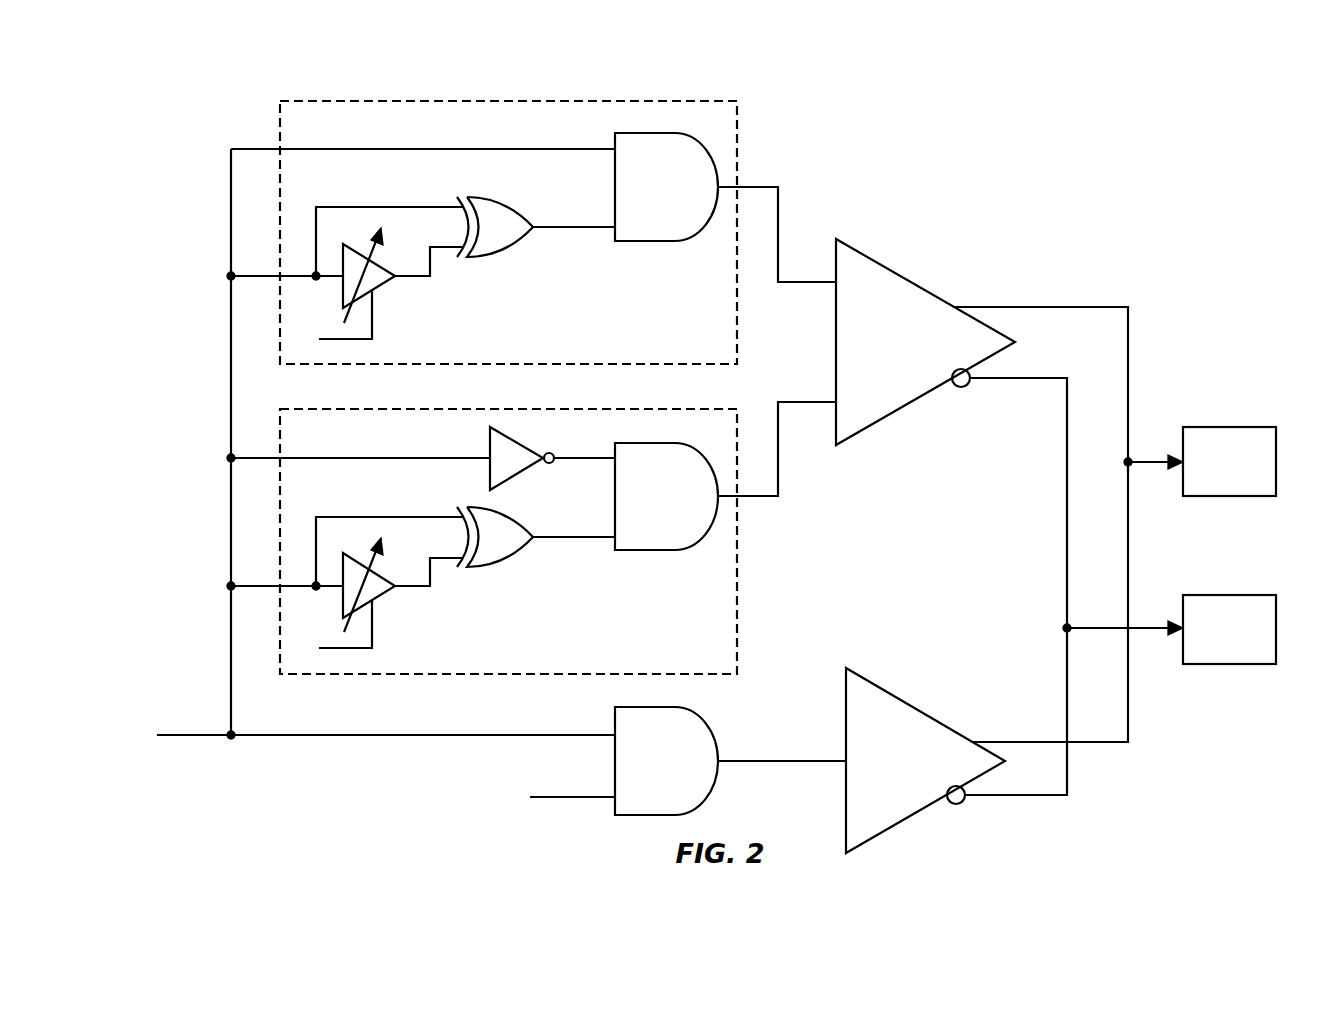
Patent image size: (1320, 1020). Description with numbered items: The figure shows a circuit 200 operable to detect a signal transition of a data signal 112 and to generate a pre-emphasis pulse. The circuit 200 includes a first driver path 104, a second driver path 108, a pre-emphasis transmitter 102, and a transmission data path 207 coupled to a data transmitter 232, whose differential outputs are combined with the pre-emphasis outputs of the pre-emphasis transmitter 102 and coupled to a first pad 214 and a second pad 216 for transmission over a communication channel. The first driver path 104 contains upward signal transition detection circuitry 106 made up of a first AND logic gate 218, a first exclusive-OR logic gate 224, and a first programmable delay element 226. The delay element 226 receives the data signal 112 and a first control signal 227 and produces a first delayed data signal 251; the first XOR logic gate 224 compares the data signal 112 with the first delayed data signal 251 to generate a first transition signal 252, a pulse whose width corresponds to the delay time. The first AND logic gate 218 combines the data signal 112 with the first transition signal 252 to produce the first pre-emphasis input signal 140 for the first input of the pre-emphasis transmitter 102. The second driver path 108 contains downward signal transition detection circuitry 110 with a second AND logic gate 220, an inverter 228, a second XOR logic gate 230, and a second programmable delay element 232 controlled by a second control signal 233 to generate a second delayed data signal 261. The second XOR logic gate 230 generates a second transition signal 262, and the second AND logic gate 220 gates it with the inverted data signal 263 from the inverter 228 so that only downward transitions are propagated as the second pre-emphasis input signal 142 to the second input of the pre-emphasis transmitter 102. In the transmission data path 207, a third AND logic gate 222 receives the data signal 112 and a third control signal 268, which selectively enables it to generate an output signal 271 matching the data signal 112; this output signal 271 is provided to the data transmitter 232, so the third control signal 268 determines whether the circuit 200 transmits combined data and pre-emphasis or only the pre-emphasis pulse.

The pre-emphasis transmitter 102 is at (903, 272).
The first driver path 104 is at (508, 208).
The upward signal transition detection circuitry 106 is at (665, 100).
The second driver path 108 is at (508, 547).
The downward signal transition detection circuitry 110 is at (666, 408).
The data signal 112 is at (208, 734).
The first pre-emphasis input signal 140 is at (780, 210).
The second pre-emphasis input signal 142 is at (778, 477).
The circuit 200 is at (1118, 148).
The transmission data path 207 is at (447, 810).
The first pad 214 is at (1232, 426).
The second pad 216 is at (1232, 594).
The first AND logic gate 218 is at (652, 243).
The second AND logic gate 220 is at (652, 552).
The third AND logic gate 222 is at (703, 718).
The first exclusive-OR logic gate 224 is at (497, 258).
The first programmable delay element 226 is at (383, 288).
The first control signal 227 is at (372, 330).
The inverter 228 is at (488, 445).
The second XOR logic gate 230 is at (497, 568).
The data transmitter 232 is at (383, 598).
The second control signal 233 is at (372, 640).
The first delayed data signal 251 is at (455, 246).
The first transition signal 252 is at (600, 226).
The second delayed data signal 261 is at (455, 557).
The second transition signal 262 is at (600, 536).
The inverted data signal 263 is at (600, 457).
The third control signal 268 is at (572, 797).
The output signal 271 is at (763, 760).